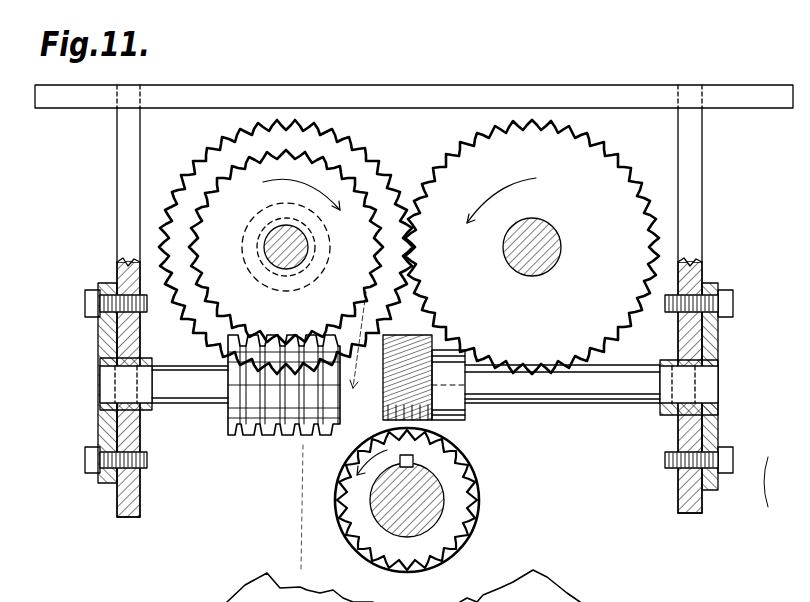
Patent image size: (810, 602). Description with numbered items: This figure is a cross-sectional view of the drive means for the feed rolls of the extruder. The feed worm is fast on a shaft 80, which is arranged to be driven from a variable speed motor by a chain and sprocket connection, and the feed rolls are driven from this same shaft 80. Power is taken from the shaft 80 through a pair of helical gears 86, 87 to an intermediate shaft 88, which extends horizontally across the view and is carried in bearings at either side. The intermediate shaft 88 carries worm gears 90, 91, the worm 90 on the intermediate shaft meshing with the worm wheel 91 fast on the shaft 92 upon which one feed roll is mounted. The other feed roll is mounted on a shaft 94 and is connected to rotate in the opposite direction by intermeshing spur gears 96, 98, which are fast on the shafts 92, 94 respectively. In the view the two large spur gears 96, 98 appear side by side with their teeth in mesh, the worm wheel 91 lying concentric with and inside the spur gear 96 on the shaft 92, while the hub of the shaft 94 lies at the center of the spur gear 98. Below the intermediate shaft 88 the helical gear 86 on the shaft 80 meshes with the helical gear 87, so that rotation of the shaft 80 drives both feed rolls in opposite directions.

The shaft 80 is at (443, 502).
The helical gear 86 is at (467, 462).
The helical gear 87 is at (467, 410).
The intermediate shaft 88 is at (548, 400).
The worm gear 90 is at (262, 432).
The worm gear 91 is at (203, 195).
The shaft 92 is at (270, 233).
The shaft 94 is at (502, 253).
The spur gear 96 is at (200, 153).
The spur gear 98 is at (613, 150).